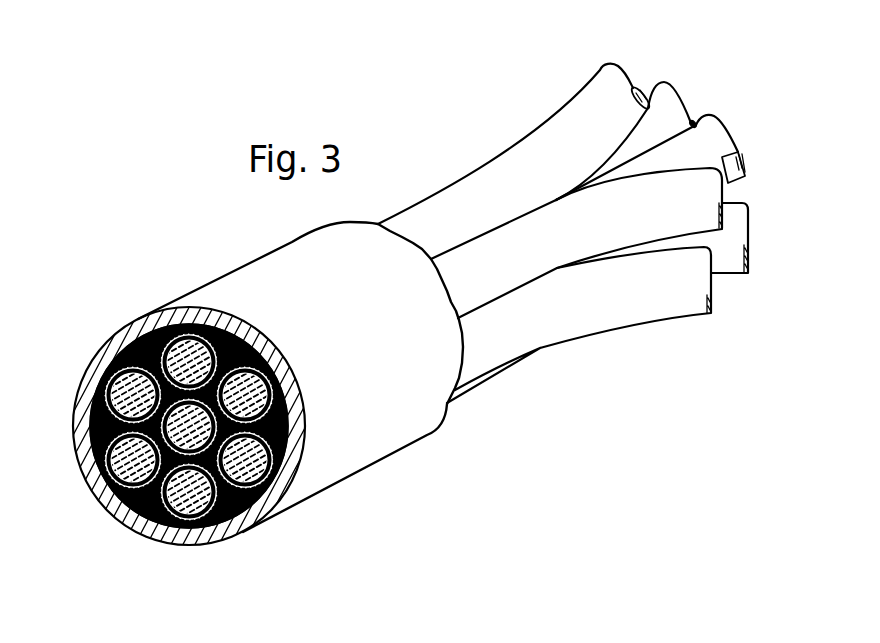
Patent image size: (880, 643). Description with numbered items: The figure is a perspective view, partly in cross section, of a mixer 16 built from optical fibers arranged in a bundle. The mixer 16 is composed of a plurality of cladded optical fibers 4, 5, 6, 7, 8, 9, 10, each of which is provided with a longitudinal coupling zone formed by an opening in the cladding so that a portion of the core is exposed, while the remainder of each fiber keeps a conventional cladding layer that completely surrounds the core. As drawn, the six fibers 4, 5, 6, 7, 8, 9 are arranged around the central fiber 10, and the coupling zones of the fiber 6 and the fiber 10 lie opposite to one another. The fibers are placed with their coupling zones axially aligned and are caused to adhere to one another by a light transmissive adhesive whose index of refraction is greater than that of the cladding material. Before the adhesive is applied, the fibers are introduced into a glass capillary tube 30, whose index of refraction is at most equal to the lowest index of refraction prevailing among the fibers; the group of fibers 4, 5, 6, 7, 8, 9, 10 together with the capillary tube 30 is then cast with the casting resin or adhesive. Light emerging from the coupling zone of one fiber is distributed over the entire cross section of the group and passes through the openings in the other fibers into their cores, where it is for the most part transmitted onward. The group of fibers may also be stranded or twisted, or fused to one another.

The cladded optical fiber 4 is at (107, 400).
The cladded optical fiber 5 is at (100, 493).
The cladded optical fiber 6 is at (187, 513).
The cladded optical fiber 7 is at (222, 466).
The cladded optical fiber 8 is at (258, 353).
The cladded optical fiber 9 is at (186, 328).
The cladded optical fiber 10 is at (218, 407).
The mixer 16 is at (384, 309).
The glass capillary tube 30 is at (322, 484).